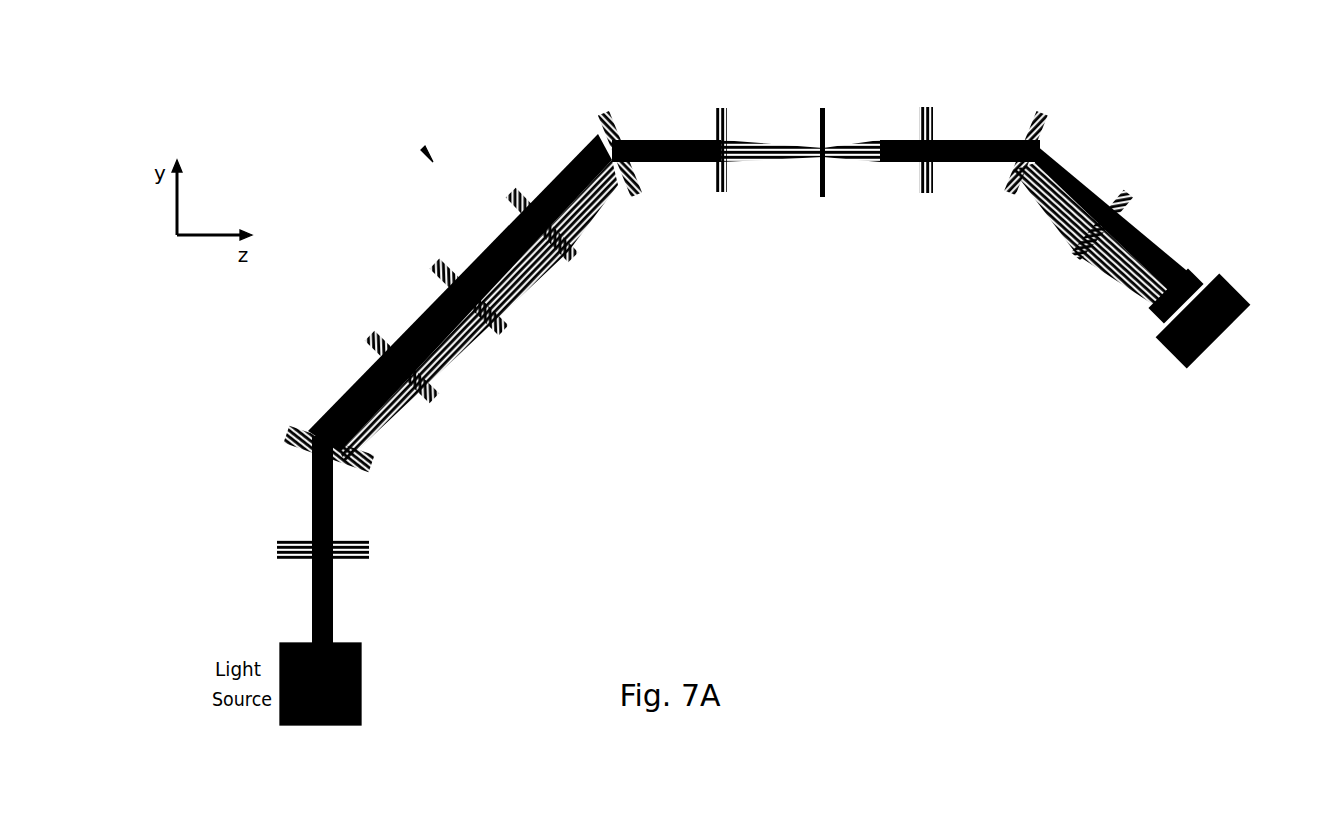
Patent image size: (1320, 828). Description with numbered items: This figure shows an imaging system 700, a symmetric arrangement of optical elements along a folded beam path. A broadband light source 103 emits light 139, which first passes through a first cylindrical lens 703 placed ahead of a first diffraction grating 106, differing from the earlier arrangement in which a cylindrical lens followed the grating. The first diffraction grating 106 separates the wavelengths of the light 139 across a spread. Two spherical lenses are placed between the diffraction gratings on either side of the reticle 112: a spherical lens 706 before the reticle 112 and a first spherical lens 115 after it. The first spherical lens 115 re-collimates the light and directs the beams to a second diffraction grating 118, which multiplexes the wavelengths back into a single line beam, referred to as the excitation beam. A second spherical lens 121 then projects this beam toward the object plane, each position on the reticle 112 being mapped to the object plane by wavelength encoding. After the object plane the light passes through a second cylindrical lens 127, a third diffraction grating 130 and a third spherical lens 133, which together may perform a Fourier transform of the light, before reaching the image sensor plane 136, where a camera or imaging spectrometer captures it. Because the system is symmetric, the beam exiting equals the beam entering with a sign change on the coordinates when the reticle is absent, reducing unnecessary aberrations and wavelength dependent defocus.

The imaging system 700 is at (427, 153).
The broadband light source 103 is at (362, 687).
The light 139 is at (315, 618).
The first cylindrical lens 703 is at (360, 562).
The first diffraction grating 106 is at (363, 468).
The spherical lens 706 is at (420, 395).
The reticle mask 112 is at (505, 335).
The first spherical lens 115 is at (570, 250).
The second diffraction grating 118 is at (638, 190).
The second spherical lens 121 is at (728, 108).
The second cylindrical lens 127 is at (930, 125).
The third diffraction grating 130 is at (1023, 190).
The third spherical lens 133 is at (1079, 264).
The image sensor plane 136 is at (1156, 330).